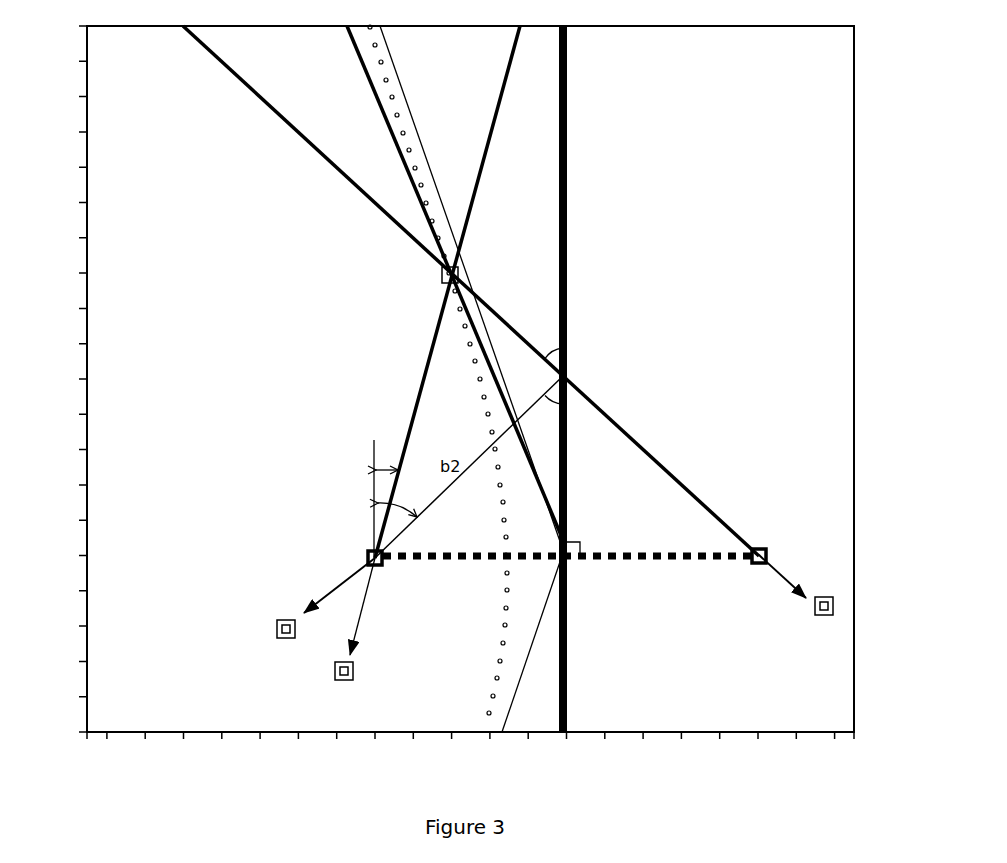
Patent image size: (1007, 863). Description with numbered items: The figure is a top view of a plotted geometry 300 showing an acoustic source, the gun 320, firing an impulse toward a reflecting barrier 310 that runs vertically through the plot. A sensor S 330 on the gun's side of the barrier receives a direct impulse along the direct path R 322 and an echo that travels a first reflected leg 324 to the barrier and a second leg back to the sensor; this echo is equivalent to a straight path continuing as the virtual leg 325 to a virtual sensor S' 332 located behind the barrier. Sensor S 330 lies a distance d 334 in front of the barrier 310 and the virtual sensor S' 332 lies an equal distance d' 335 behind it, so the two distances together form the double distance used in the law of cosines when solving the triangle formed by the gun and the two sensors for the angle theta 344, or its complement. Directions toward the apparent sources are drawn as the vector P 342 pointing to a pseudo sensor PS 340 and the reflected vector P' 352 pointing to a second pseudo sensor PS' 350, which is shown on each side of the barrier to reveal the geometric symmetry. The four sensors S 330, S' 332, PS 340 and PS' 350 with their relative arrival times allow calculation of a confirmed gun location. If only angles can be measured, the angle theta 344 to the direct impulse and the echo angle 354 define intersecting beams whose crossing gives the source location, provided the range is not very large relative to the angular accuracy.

The plot of shooter localization geometry 300 is at (445, 396).
The barrier 310 is at (570, 133).
The gun 320 is at (438, 275).
The direct path R 322 is at (427, 346).
The echo path b1 324 is at (503, 317).
The virtual echo path b2' 325 is at (622, 422).
The sensor S 330 is at (363, 551).
The virtual sensor S' 332 is at (755, 566).
The distance d 334 is at (453, 568).
The distance d' 335 is at (618, 566).
The pseudo sensor PS 340 is at (340, 686).
The direction vector P 342 is at (364, 625).
The angle θ 344 is at (387, 499).
The second pseudo sensor PS' 350 is at (288, 643).
The reflected direction vector P' 352 is at (325, 592).
The angle to the echo 354 is at (406, 504).